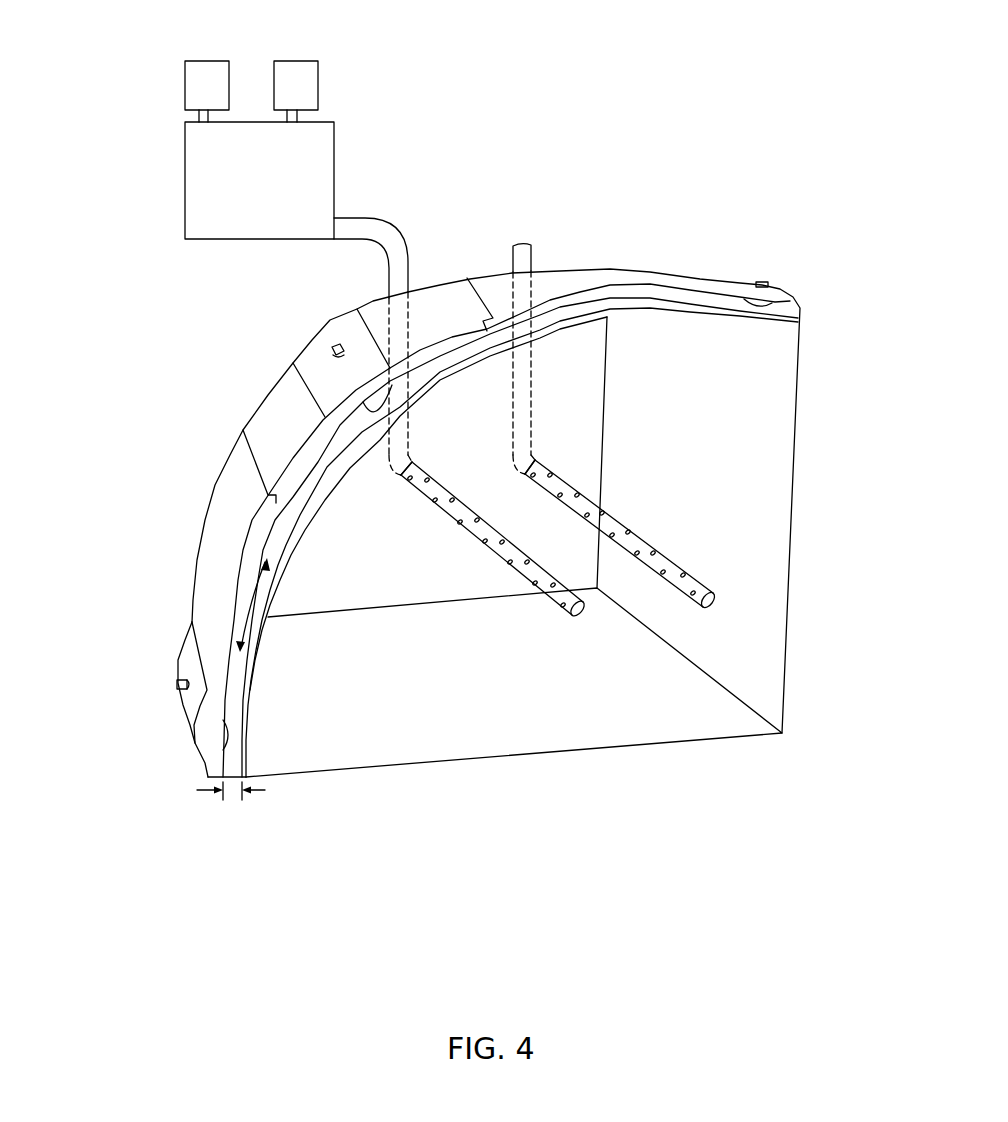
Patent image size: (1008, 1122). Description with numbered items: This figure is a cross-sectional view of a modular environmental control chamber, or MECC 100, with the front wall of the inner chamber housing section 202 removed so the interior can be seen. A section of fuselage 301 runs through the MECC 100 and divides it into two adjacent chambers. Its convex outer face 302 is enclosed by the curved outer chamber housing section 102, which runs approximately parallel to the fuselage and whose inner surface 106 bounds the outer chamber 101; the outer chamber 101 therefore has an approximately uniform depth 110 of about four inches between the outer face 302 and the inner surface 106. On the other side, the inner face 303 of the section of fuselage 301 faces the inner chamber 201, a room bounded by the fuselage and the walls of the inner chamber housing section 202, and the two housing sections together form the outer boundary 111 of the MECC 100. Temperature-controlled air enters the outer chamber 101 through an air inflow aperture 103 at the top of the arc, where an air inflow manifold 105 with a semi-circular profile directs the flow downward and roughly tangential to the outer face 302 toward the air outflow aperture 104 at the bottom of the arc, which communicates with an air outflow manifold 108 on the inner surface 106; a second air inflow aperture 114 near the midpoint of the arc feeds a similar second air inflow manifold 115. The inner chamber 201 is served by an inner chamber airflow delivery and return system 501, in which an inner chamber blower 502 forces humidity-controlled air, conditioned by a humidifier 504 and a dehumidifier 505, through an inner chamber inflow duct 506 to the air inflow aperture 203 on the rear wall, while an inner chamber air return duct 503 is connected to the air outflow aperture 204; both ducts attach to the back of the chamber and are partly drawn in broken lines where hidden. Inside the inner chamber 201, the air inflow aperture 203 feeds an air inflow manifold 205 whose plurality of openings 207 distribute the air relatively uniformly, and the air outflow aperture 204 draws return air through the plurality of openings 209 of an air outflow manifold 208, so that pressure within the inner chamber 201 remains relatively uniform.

The modular environmental control chamber (MECC) 100 is at (484, 483).
The outer chamber 101 is at (250, 607).
The outer chamber housing section 102 is at (279, 412).
The air inflow aperture 103 is at (763, 282).
The air outflow aperture 104 is at (177, 685).
The air inflow manifold 105 is at (757, 304).
The inner surface of the outer chamber housing section 106 is at (297, 497).
The air outflow manifold 108 is at (228, 733).
The approximately uniform depth 110 is at (265, 790).
The outer boundary 111 is at (208, 492).
The second air inflow aperture 114 is at (337, 347).
The second air inflow manifold 115 is at (366, 414).
The inner chamber 201 is at (522, 668).
The inner chamber housing section 202 is at (784, 480).
The air inflow aperture 203 is at (406, 462).
The air outflow aperture 204 is at (528, 462).
The air inflow manifold 205 is at (494, 540).
The plurality of openings 207 is at (450, 509).
The air outflow manifold 208 is at (621, 535).
The plurality of openings 209 is at (642, 545).
The section of fuselage 301 is at (247, 693).
The outer face 302 is at (248, 682).
The inner face 303 is at (250, 720).
The inner chamber airflow delivery and return system 501 is at (321, 240).
The inner chamber blower 502 is at (334, 158).
The inner chamber air return duct 503 is at (532, 255).
The humidifier 504 is at (206, 60).
The dehumidifier 505 is at (296, 60).
The inner chamber inflow duct 506 is at (401, 239).